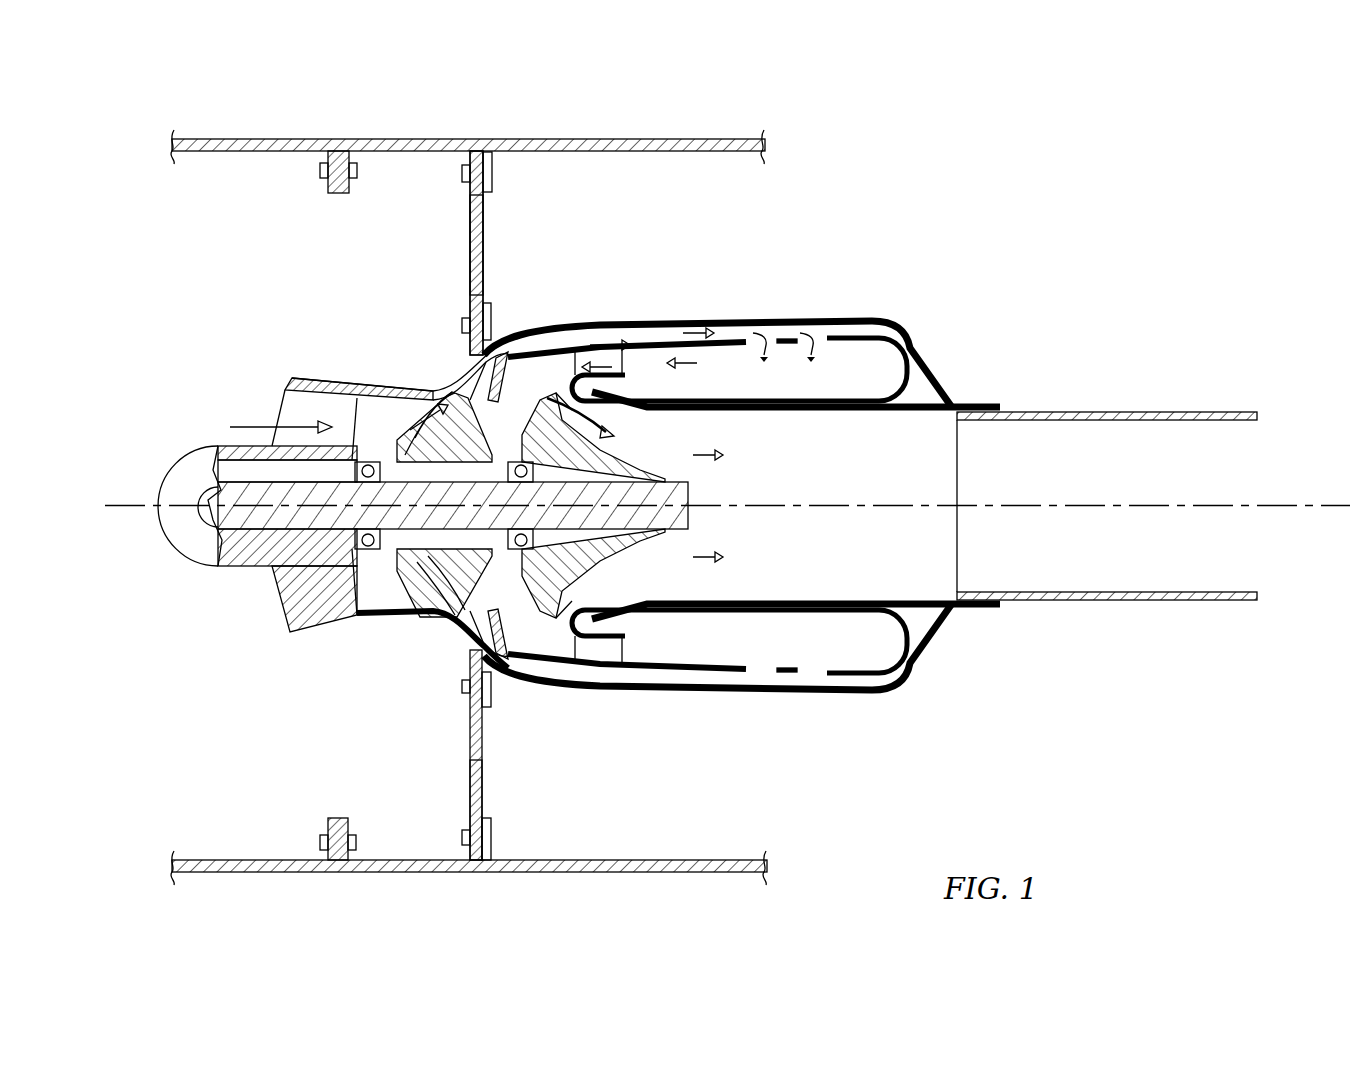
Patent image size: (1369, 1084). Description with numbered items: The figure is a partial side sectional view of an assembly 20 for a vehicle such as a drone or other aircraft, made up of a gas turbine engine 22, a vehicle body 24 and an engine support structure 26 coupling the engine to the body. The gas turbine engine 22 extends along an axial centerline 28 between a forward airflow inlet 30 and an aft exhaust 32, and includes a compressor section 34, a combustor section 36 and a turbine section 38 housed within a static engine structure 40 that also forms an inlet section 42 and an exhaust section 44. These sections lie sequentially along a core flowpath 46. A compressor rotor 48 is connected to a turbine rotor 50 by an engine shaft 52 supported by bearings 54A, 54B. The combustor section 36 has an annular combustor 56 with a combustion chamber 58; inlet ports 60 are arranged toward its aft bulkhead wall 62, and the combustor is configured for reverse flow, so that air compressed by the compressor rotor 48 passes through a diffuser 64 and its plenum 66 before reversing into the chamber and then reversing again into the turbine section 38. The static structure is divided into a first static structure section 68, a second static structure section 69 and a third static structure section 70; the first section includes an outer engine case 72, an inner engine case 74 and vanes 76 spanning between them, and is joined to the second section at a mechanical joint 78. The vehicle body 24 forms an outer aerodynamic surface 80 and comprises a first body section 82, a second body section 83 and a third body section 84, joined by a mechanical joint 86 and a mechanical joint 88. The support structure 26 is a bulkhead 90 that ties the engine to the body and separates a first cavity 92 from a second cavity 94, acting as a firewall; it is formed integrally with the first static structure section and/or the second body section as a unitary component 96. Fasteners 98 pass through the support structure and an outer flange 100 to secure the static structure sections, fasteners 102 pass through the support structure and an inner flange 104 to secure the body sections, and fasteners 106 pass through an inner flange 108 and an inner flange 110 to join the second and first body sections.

The assembly 20 is at (133, 124).
The gas turbine engine 22 is at (1110, 258).
The vehicle body 24 is at (772, 118).
The engine support structure 26 is at (442, 232).
The axial centerline 28 is at (105, 530).
The airflow inlet 30 is at (282, 418).
The exhaust 32 is at (1260, 441).
The compressor section 34 is at (421, 389).
The combustor section 36 is at (729, 316).
The turbine section 38 is at (499, 678).
The static engine structure 40 is at (505, 320).
The inlet section 42 is at (348, 384).
The exhaust section 44 is at (1016, 401).
The core flowpath 46 is at (375, 418).
The compressor rotor 48 is at (416, 614).
The turbine rotor 50 is at (580, 566).
The engine shaft 52 is at (690, 522).
The bearing 54A is at (352, 567).
The bearing 54B is at (572, 566).
The annular combustor 56 is at (839, 334).
The annular combustion chamber 58 is at (829, 498).
The inlet ports 60 is at (812, 330).
The aft bulkhead wall 62 is at (906, 364).
The diffuser 64 is at (612, 321).
The diffuser plenum 66 is at (665, 341).
The first static structure section 68 is at (296, 657).
The second static structure section 69 is at (549, 708).
The third static structure section 70 is at (1100, 612).
The outer engine case 72 is at (298, 378).
The inner engine case 74 is at (232, 446).
The vanes 76 is at (293, 390).
The mechanical joint 78 is at (458, 716).
The outer aerodynamic surface 80 is at (401, 138).
The first body section 82 is at (228, 878).
The second body section 83 is at (396, 878).
The third body section 84 is at (695, 878).
The mechanical joint 86 is at (338, 878).
The mechanical joint 88 is at (476, 878).
The bulkhead 90 is at (476, 253).
The first cavity 92 is at (207, 234).
The second cavity 94 is at (649, 192).
The unitary component 96 is at (450, 118).
The fasteners 98 is at (462, 318).
The outer flange 100 is at (492, 305).
The fasteners 102 is at (493, 176).
The inner flange 104 is at (484, 196).
The fasteners 106 is at (320, 171).
The inner flange 108 is at (352, 190).
The inner flange 110 is at (332, 194).